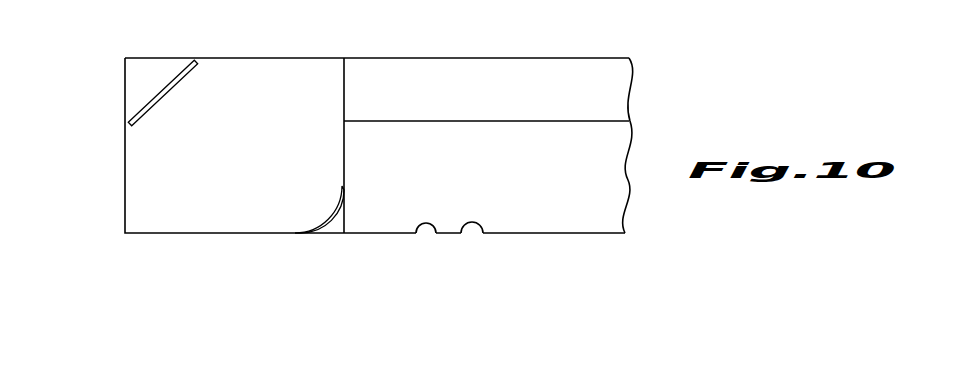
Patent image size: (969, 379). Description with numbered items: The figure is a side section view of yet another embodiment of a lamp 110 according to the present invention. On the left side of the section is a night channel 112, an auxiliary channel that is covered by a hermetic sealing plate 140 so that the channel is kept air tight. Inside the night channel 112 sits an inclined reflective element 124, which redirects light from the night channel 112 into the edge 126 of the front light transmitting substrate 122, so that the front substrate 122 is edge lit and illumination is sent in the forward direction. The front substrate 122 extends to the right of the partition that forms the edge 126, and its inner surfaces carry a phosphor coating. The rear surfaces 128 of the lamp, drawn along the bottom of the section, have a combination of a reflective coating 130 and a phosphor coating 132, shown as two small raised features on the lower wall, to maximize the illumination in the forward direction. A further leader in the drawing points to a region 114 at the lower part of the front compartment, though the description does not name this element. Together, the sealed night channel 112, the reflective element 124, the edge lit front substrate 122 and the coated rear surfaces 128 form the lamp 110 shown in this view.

The lamp 110 is at (387, 57).
The night channel 112 is at (173, 212).
The intermediate wall / passage 114 is at (400, 203).
The front light transmitting substrate 122 is at (527, 57).
The reflective element 124 is at (162, 87).
The edge of the front substrate 126 is at (343, 97).
The rear surfaces 128 is at (557, 233).
The reflective coating 130 is at (482, 234).
The phosphor coating 132 is at (415, 234).
The hermetic sealing plate 140 is at (267, 58).